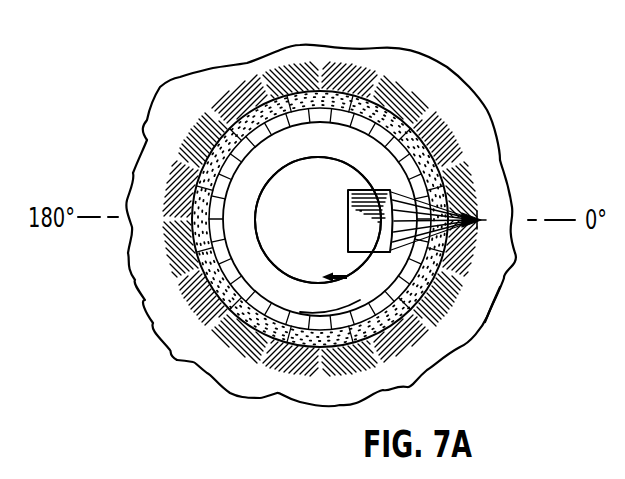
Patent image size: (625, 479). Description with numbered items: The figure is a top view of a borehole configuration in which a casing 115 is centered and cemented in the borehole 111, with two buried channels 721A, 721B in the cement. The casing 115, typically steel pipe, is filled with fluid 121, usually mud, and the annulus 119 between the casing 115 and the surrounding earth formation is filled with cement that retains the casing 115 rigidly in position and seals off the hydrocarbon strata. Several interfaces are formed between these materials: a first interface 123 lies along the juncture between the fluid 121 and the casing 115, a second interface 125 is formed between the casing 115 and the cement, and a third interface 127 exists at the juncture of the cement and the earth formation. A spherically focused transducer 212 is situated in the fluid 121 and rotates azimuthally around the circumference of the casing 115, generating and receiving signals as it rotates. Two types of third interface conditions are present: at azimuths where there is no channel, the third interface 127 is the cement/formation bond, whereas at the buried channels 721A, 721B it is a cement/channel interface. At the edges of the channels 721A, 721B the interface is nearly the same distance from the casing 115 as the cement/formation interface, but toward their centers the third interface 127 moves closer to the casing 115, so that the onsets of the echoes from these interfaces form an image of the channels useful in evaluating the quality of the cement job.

The borehole 111 is at (497, 104).
The annulus 119 is at (259, 102).
The buried channel 721A is at (334, 90).
The buried channel 721B is at (188, 206).
The casing 115 is at (291, 118).
The second interface 125 is at (225, 150).
The fluid 121 is at (319, 223).
The spherically focused transducer 212 is at (346, 237).
The first interface 123 is at (360, 300).
The third interface 127 is at (485, 322).